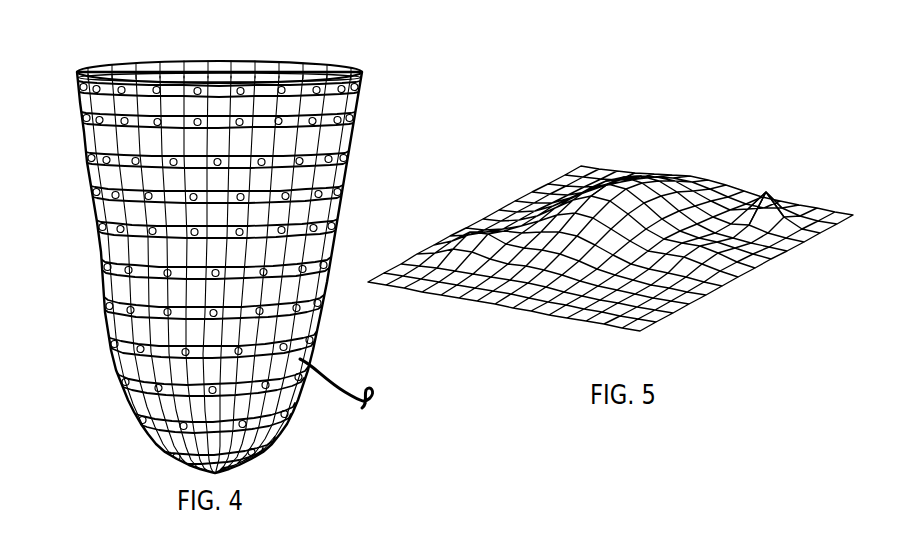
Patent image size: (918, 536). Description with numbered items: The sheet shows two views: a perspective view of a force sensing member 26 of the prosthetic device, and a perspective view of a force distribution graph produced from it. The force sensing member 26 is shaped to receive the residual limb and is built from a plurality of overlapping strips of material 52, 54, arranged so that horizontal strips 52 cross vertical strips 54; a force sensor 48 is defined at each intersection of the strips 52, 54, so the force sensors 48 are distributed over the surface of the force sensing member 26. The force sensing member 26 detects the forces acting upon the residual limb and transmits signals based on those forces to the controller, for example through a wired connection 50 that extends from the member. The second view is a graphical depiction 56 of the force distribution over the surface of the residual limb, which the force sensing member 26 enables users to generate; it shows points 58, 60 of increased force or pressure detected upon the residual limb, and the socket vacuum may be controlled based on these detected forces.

In FIG. 4, the force sensing member 26 is at (370, 45).
In FIG. 4, the force sensors 48 is at (279, 86).
In FIG. 4, the wired connection 50 is at (342, 383).
In FIG. 4, the strips of material 52 is at (125, 106).
In FIG. 4, the strips of material 54 is at (112, 118).
In FIG. 5, the graphical depiction 56 is at (708, 110).
In FIG. 5, the point of increased force/pressure 58 is at (612, 182).
In FIG. 5, the point of increased force/pressure 60 is at (766, 190).